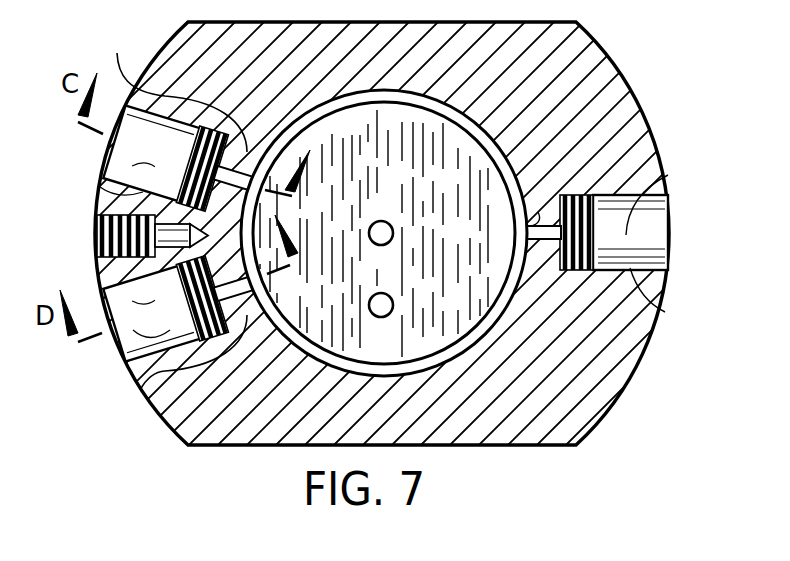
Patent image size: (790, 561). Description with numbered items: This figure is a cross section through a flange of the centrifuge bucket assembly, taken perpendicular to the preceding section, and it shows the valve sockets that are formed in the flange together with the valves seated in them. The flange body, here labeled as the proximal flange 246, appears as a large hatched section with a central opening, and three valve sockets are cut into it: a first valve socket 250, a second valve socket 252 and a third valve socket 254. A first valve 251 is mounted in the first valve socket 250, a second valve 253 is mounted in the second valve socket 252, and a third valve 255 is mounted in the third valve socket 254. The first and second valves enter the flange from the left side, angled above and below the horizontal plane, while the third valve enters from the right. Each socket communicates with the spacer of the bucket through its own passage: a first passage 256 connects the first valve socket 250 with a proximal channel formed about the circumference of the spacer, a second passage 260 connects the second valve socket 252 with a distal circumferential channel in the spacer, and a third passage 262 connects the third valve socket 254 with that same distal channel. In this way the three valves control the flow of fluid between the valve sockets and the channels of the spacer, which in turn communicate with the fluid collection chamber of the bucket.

The proximal flange 246 is at (639, 94).
The first valve socket 250 is at (103, 197).
The first valve 251 is at (143, 163).
The second valve socket 252 is at (141, 388).
The second valve 253 is at (123, 358).
The third valve socket 254 is at (650, 175).
The third valve 255 is at (659, 307).
The first passage 256 is at (172, 89).
The second passage 260 is at (250, 302).
The third passage 262 is at (538, 214).